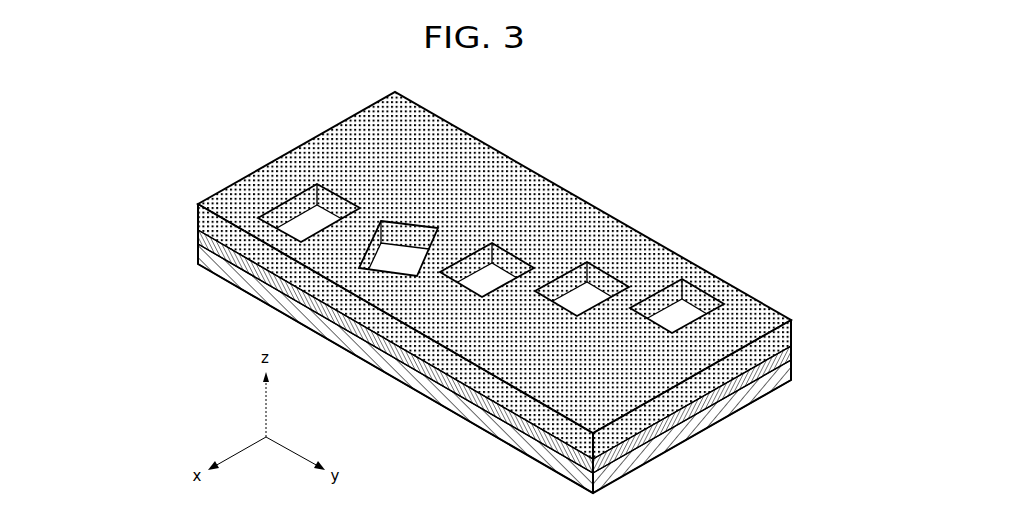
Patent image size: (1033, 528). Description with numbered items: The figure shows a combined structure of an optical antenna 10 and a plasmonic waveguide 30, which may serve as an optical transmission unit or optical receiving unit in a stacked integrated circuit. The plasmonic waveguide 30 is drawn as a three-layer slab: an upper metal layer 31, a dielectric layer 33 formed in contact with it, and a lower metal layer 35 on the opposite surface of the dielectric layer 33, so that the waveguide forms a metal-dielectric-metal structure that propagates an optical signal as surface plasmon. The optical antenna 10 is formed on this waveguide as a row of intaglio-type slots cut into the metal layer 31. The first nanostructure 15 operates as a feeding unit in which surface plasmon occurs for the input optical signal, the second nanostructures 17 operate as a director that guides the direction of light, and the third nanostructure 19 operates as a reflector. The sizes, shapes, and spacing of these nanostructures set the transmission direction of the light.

The optical antenna 10 is at (687, 189).
The first nanostructure 15 is at (410, 233).
The second nanostructure 17 is at (502, 260).
The third nanostructure 19 is at (332, 203).
The plasmonic waveguide 30 is at (454, 348).
The metal layer 31 is at (197, 220).
The dielectric layer 33 is at (197, 238).
The metal layer 35 is at (471, 368).